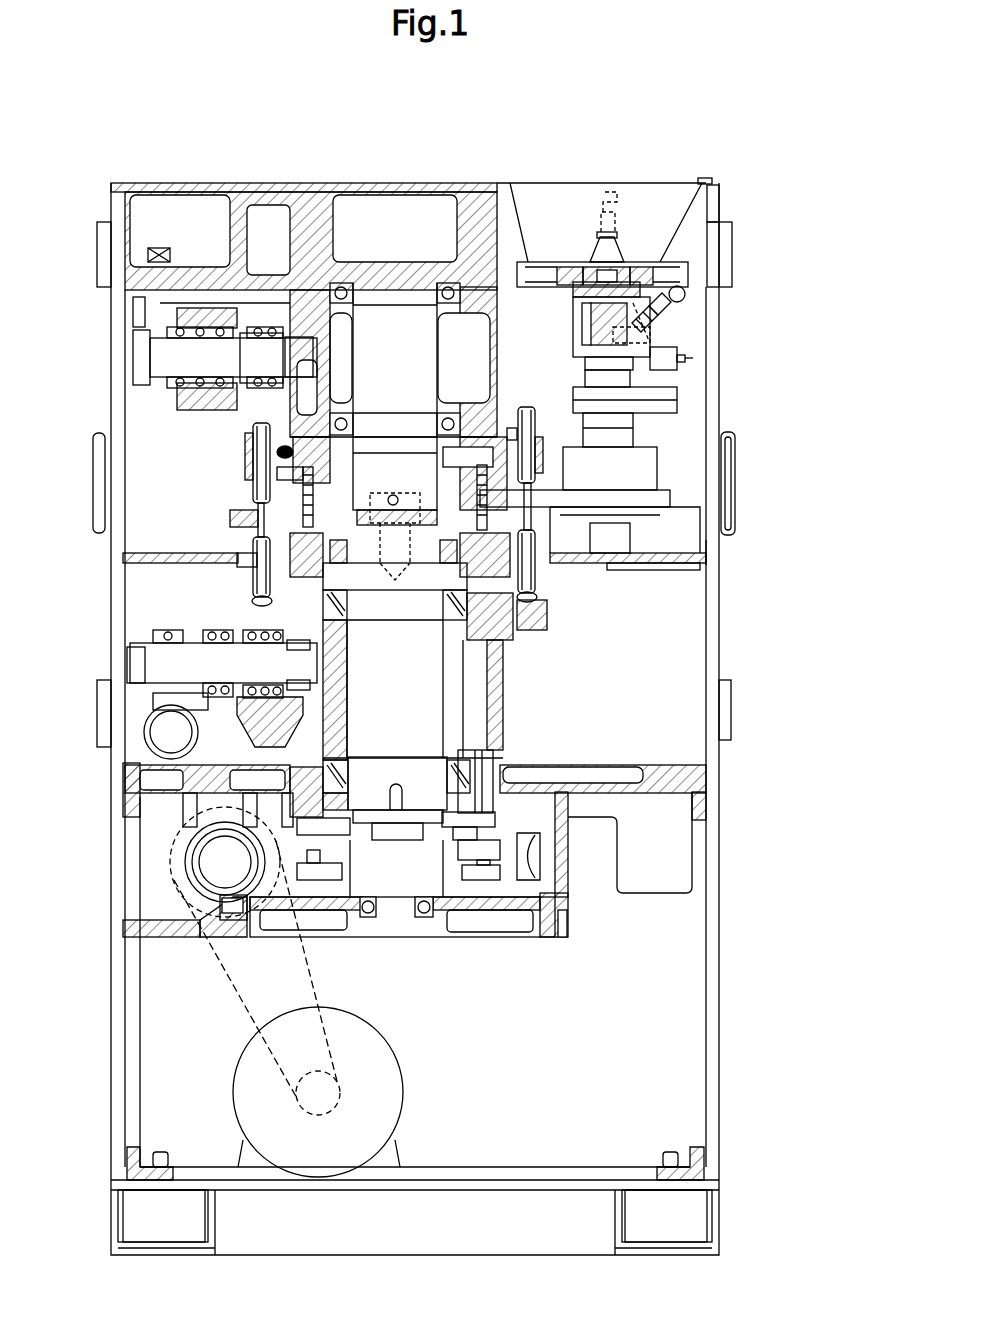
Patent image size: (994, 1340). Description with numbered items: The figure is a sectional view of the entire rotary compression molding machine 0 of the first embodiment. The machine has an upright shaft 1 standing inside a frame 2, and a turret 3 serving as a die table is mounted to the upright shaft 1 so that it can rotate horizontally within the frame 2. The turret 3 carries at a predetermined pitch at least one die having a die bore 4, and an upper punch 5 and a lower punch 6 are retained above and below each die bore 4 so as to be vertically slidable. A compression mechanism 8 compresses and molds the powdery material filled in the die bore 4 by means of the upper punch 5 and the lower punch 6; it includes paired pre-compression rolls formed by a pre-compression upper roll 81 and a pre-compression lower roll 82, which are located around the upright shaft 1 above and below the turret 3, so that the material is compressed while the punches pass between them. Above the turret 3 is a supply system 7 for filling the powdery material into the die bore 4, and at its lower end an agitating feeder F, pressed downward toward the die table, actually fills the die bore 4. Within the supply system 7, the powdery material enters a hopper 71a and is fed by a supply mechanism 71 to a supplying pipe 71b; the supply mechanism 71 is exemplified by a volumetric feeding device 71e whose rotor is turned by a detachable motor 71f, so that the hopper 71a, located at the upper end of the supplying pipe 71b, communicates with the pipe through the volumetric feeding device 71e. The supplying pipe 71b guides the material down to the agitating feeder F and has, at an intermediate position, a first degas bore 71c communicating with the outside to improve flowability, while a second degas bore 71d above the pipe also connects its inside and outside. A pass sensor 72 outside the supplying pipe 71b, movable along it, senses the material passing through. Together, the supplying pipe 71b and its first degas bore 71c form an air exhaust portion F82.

The rotary compression molding machine 0 is at (721, 184).
The upright shaft 1 is at (447, 711).
The frame 2 is at (200, 262).
The turret 3 is at (551, 542).
The die bore 4 is at (255, 508).
The upper punch 5 is at (522, 403).
The lower punch 6 is at (530, 574).
The supply system 7 is at (548, 311).
The compression mechanism 8 is at (240, 541).
The supply mechanism 71 is at (567, 339).
The hopper 71a is at (719, 212).
The supplying pipe 71b is at (660, 412).
The first degas bore 71c is at (690, 300).
The second degas bore 71d is at (627, 214).
The volumetric feeding device 71e is at (693, 270).
The detachable motor 71f is at (538, 264).
The pass sensor 72 is at (678, 383).
The pre-compression upper roll 81 is at (257, 413).
The pre-compression lower roll 82 is at (250, 610).
The agitating feeder F is at (712, 563).
The air exhaust portion F82 is at (660, 334).